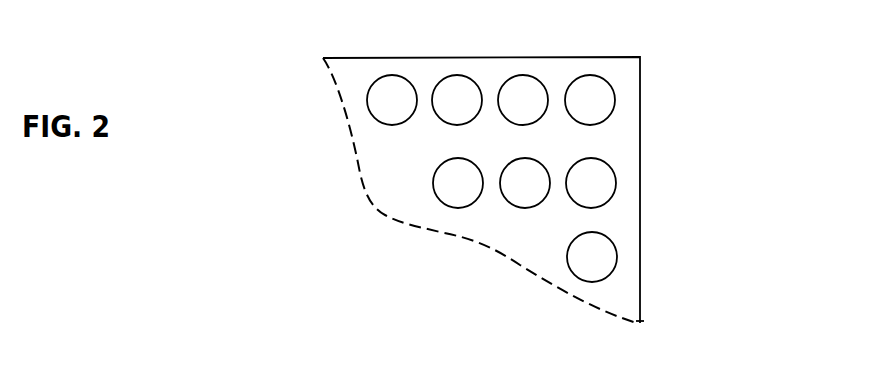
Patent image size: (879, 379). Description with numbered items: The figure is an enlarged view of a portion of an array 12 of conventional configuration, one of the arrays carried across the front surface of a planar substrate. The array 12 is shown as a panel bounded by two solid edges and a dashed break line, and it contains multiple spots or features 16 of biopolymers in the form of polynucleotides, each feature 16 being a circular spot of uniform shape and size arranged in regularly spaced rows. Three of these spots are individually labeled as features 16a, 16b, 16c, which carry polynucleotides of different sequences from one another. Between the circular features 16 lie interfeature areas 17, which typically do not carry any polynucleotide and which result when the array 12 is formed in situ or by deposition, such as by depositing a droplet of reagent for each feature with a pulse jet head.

The array 12 is at (625, 290).
The feature 16 is at (615, 248).
The feature 16a is at (433, 183).
The feature 16b is at (523, 183).
The feature 16c is at (590, 183).
The interfeature area 17 is at (490, 93).